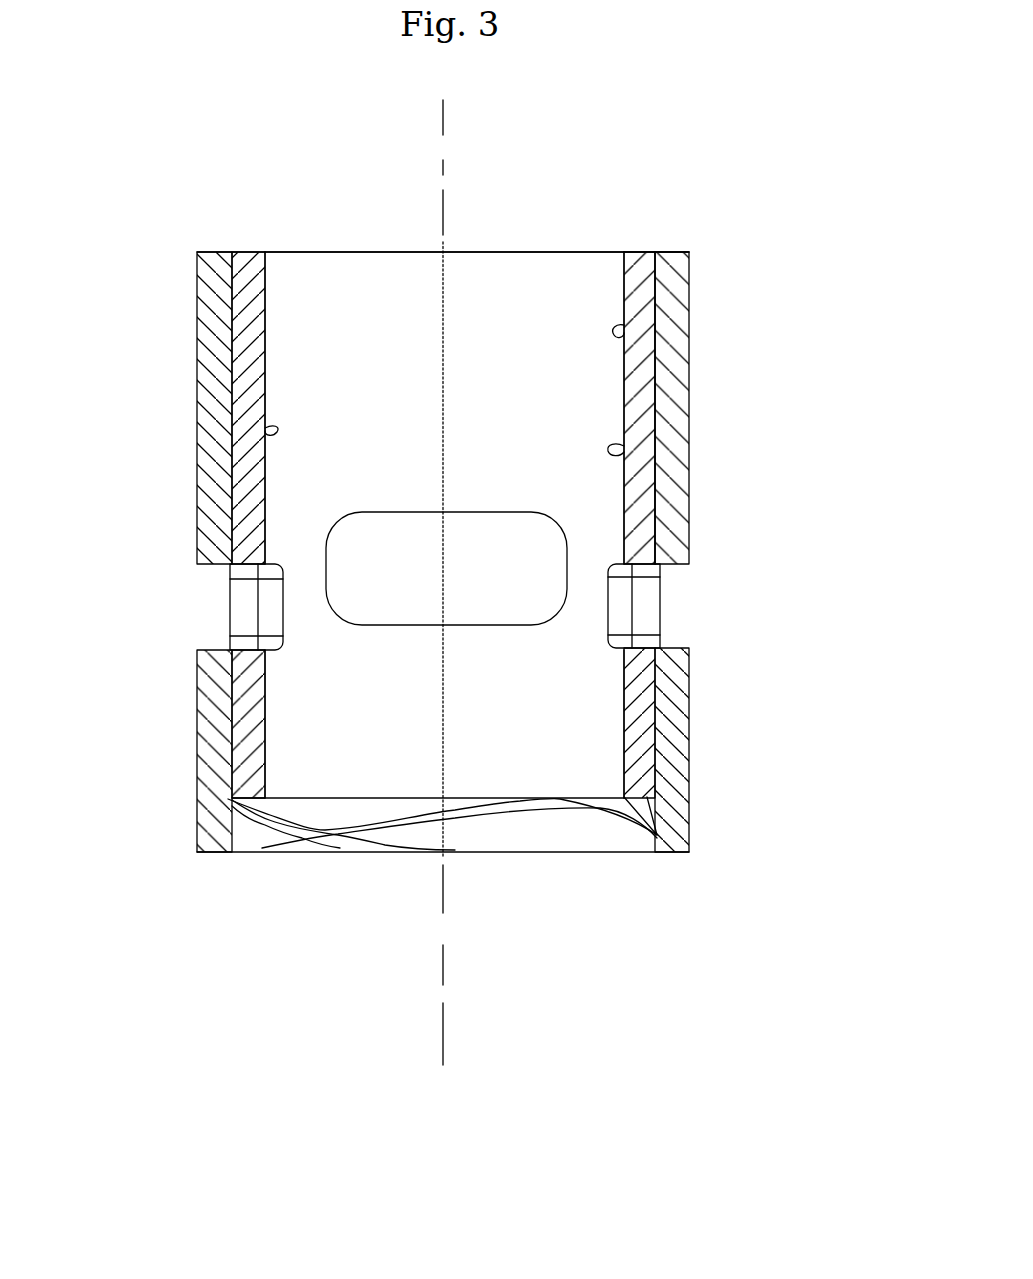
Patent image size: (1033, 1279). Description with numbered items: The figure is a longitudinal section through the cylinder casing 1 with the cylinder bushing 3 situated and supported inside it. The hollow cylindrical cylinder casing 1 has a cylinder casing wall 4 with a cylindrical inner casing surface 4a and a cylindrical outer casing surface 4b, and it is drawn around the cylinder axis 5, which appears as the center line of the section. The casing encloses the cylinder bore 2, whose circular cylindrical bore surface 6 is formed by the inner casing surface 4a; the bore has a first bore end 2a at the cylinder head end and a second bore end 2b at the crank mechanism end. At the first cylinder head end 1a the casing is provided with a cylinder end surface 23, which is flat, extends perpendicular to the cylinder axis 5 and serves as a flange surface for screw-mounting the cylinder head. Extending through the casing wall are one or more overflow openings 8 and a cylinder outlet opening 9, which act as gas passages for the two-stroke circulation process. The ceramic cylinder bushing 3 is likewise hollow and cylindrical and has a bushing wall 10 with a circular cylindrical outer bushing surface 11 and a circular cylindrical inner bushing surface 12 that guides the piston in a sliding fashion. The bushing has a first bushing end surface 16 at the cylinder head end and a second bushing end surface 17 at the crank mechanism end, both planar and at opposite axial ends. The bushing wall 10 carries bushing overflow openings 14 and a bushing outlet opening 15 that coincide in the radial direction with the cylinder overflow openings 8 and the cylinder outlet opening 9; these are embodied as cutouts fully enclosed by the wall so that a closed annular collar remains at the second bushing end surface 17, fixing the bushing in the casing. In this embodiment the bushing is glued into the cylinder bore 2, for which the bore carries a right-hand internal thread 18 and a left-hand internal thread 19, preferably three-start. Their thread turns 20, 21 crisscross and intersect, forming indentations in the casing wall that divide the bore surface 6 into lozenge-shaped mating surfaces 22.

The cylinder casing 1 is at (712, 200).
The first cylinder head end 1a is at (205, 228).
The cylinder bore 2 is at (306, 315).
The first bore end 2a is at (531, 236).
The second bore end 2b is at (305, 860).
The cylinder bushing 3 is at (646, 270).
The cylinder casing wall 4 is at (200, 360).
The inner casing surface 4a is at (640, 318).
The outer casing surface 4b is at (690, 395).
The cylinder axis 5 is at (442, 1037).
The bore surface 6 is at (242, 433).
The overflow opening 8 is at (236, 590).
The cylinder outlet opening 9 is at (530, 543).
The bushing wall 10 is at (250, 702).
The outer bushing surface 11 is at (655, 370).
The inner bushing surface 12 is at (606, 452).
The bushing overflow opening 14 is at (256, 607).
The bushing outlet opening 15 is at (446, 568).
The first bushing end surface 16 is at (635, 250).
The second bushing end surface 17 is at (640, 742).
The right-hand internal thread 18 is at (273, 822).
The left-hand internal thread 19 is at (497, 815).
The thread turns 20 is at (527, 800).
The thread turns 21 is at (246, 812).
The mating surfaces 22 is at (425, 820).
The cylinder end surface 23 is at (213, 253).